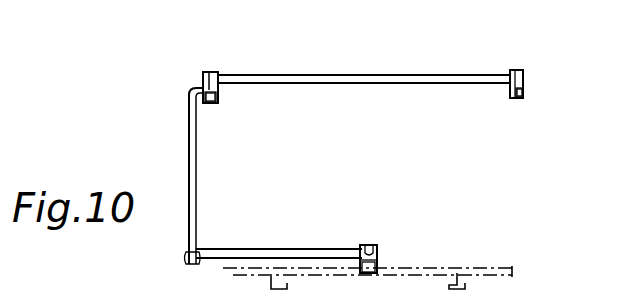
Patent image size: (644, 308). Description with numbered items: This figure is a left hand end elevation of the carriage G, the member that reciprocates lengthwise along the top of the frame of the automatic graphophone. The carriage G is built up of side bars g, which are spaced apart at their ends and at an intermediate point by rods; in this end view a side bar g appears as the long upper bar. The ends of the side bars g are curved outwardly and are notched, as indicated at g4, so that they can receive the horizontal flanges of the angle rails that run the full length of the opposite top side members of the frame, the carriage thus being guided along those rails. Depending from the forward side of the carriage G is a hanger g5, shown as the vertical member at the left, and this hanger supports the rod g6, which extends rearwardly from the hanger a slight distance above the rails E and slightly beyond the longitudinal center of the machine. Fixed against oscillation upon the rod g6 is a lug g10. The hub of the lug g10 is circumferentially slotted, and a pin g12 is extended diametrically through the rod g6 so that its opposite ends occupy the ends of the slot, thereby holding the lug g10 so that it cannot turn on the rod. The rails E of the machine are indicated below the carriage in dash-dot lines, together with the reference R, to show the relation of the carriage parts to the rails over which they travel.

The carriage G is at (308, 73).
The side bars g is at (212, 72).
The notches g4 is at (218, 93).
The hangers g5 is at (196, 166).
The rod g6 is at (265, 249).
The pin g12 is at (370, 245).
The lug g10 is at (370, 273).
The rail shown in dash-dot R is at (485, 266).
The rails E is at (266, 291).